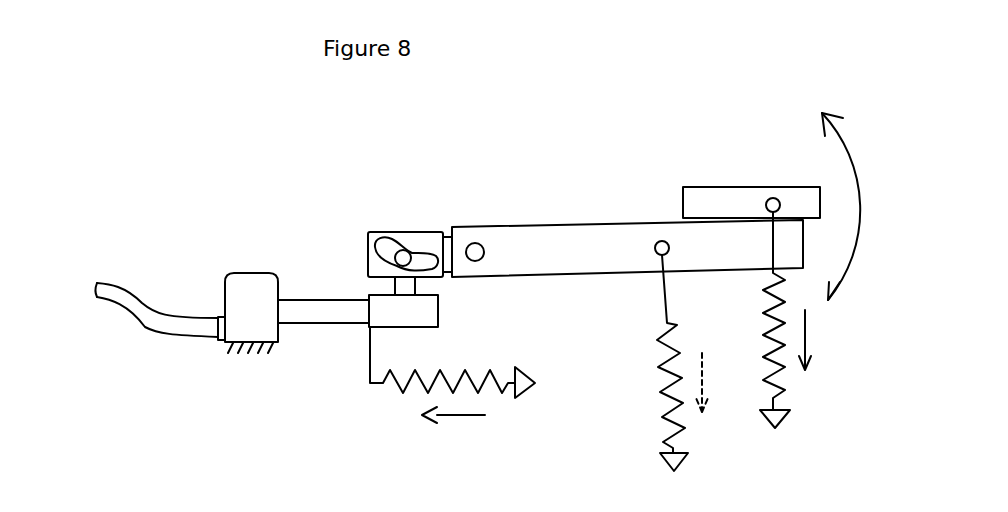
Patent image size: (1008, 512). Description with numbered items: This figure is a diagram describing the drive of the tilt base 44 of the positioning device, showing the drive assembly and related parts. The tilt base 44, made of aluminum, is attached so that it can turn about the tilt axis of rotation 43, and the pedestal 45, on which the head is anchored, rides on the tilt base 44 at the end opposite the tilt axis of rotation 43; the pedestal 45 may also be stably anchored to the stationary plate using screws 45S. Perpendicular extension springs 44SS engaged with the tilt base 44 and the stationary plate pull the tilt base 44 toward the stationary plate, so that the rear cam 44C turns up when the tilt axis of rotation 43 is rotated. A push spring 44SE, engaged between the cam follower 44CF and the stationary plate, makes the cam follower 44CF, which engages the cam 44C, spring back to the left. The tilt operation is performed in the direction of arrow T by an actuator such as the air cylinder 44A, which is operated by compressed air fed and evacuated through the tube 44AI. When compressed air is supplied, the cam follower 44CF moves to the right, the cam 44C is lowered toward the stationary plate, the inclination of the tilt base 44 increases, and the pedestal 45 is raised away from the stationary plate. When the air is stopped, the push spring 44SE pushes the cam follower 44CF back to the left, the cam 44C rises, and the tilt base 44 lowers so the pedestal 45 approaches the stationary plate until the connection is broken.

The tube 44AI is at (165, 318).
The air cylinder 44A is at (253, 300).
The cam 44C is at (418, 240).
The cam follower 44CF is at (388, 312).
The tilt axis of rotation 43 is at (475, 252).
The tilt base 44 is at (598, 247).
The pedestal 45 is at (720, 207).
The screws 45S is at (760, 360).
The perpendicular extension springs 44SS is at (660, 397).
The push spring 44SE is at (400, 400).
The arrow T is at (856, 206).